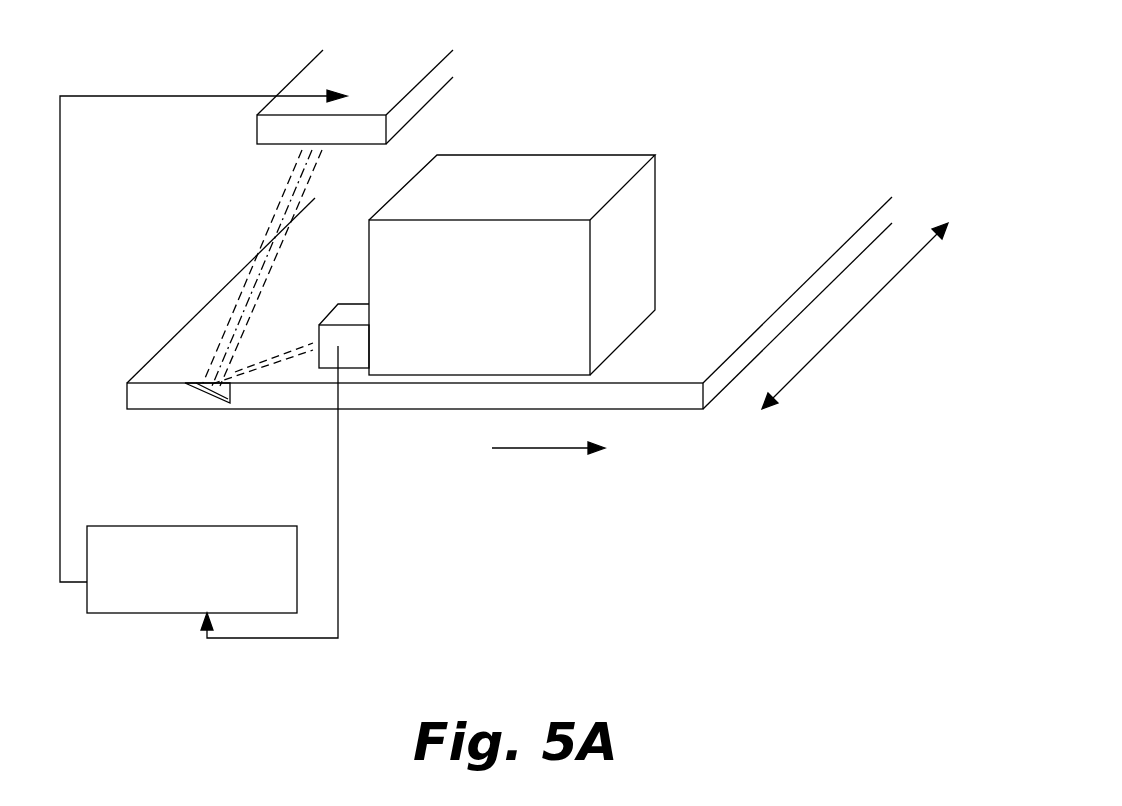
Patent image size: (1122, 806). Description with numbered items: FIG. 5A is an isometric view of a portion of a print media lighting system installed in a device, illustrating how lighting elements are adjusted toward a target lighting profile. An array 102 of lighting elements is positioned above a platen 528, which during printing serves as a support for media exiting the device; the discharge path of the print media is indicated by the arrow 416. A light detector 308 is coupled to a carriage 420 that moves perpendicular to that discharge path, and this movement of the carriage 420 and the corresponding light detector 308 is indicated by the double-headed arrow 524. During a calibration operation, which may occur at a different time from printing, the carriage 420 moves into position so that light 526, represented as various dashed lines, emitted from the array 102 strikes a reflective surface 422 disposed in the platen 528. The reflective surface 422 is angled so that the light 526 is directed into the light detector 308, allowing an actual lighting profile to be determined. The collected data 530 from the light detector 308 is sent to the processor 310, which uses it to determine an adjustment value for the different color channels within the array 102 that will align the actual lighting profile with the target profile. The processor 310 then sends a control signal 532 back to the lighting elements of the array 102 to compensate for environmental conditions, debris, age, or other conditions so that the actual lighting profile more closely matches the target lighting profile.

The array 102 is at (406, 58).
The light detector 308 is at (353, 353).
The processor 310 is at (173, 596).
The arrow 416 is at (548, 448).
The carriage 420 is at (452, 325).
The reflective surface 422 is at (213, 405).
The arrow 524 is at (800, 372).
The light 526 is at (240, 229).
The platen 528 is at (670, 397).
The collected data 530 is at (338, 575).
The control signal 532 is at (140, 95).